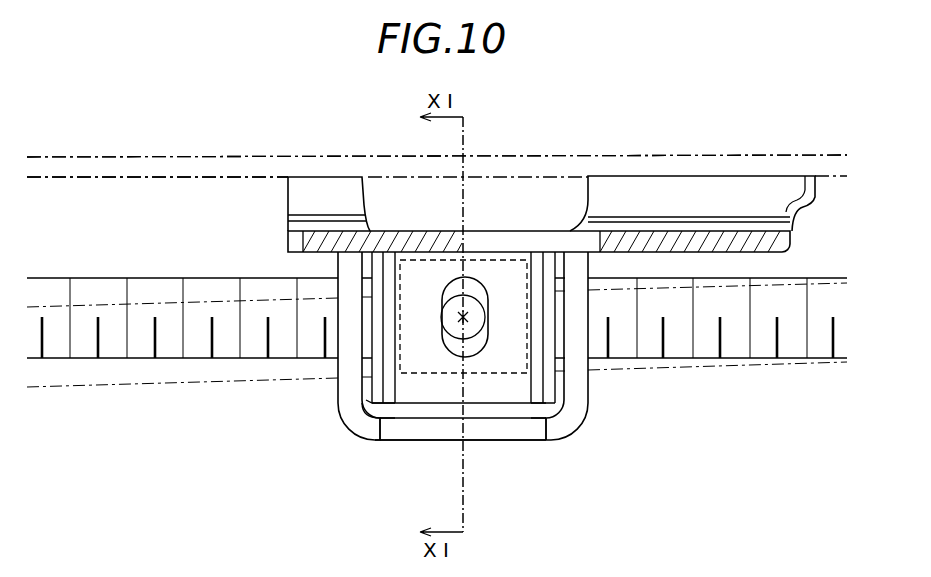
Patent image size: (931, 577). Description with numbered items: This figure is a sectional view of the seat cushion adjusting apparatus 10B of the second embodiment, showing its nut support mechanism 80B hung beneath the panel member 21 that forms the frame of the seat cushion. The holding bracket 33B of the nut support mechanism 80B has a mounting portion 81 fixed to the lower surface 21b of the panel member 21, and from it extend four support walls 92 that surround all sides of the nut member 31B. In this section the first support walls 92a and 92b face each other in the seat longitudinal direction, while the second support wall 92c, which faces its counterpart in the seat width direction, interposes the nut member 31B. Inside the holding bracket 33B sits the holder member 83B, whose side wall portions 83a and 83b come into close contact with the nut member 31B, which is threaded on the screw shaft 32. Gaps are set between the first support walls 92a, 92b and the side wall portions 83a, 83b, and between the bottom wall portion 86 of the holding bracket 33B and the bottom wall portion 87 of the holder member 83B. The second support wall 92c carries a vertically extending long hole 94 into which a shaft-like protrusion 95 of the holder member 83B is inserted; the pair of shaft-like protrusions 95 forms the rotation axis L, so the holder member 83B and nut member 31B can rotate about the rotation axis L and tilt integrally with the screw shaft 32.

The seat cushion adjusting apparatus 10B is at (133, 102).
The panel member 21 is at (561, 156).
The lower surface of the panel member 21b is at (193, 192).
The screw shaft 32 is at (97, 278).
The mounting portion 81 is at (288, 200).
The side wall portion of the holder member 83a is at (371, 283).
The side wall portion of the holder member 83b is at (557, 347).
The holder member 83B is at (363, 412).
The holding bracket 33B is at (373, 441).
The nut member 31B is at (423, 375).
The bottom wall portion of the holding bracket 86 is at (487, 441).
The bottom wall portion of the holder member 87 is at (537, 425).
The long hole 94 is at (447, 288).
The shaft-like protrusion 95 is at (472, 343).
The support wall 92 is at (463, 353).
The first support wall 92a is at (338, 395).
The first support wall 92b is at (590, 296).
The second support wall 92c is at (565, 425).
The nut support mechanism 80B is at (299, 492).
The rotation axis L is at (478, 308).